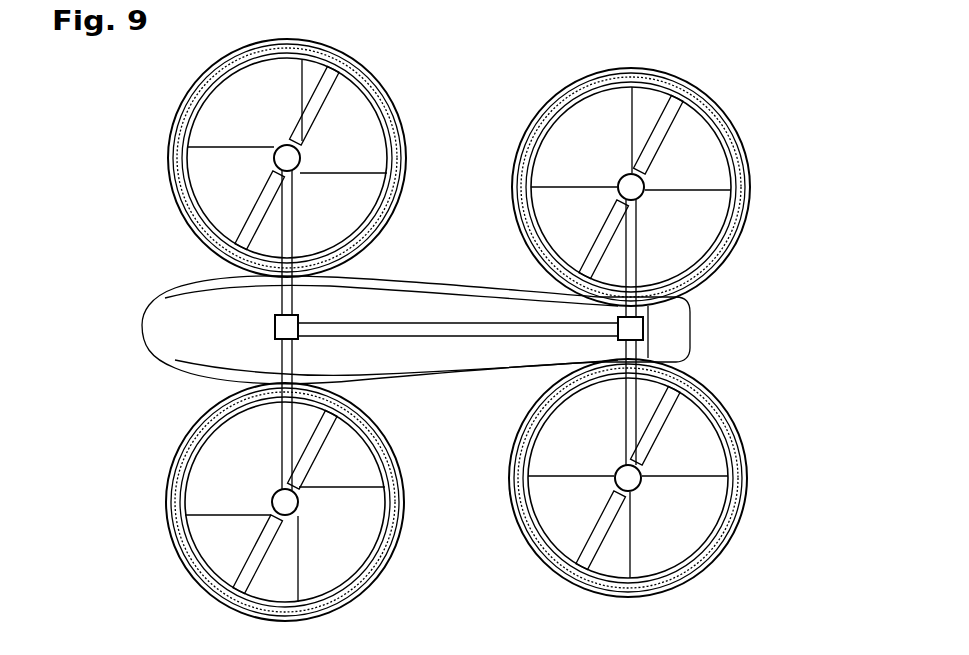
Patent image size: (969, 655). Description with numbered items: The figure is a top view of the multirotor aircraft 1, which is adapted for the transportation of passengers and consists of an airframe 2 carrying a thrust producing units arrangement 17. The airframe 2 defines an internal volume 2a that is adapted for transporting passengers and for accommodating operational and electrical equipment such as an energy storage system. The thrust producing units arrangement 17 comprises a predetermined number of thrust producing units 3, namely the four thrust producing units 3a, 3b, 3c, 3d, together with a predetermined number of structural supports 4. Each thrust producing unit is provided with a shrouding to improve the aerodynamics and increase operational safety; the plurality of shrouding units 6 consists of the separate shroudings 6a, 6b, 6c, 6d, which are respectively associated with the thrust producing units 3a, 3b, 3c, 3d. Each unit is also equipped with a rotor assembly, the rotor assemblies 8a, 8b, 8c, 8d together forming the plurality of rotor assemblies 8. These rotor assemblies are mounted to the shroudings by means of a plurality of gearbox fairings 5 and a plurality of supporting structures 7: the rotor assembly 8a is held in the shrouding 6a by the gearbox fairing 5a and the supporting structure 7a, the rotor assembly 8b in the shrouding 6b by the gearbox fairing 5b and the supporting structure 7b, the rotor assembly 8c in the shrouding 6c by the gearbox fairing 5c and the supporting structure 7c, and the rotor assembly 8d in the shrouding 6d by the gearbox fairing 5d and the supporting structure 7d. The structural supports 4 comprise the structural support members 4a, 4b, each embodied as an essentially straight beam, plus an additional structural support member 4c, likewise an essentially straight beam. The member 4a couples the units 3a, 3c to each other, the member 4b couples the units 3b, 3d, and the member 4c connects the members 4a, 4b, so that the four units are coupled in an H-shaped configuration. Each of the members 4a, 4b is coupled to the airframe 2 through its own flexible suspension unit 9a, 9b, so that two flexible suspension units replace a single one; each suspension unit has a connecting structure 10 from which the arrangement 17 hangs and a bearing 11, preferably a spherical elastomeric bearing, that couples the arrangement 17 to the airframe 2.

The multirotor aircraft 1 is at (803, 70).
The airframe 2 is at (258, 345).
The internal volume 2a is at (226, 310).
The thrust producing units 3 is at (733, 558).
The thrust producing unit 3a is at (166, 137).
The thrust producing unit 3b is at (736, 118).
The thrust producing unit 3c is at (170, 533).
The thrust producing unit 3d is at (743, 535).
The structural supports 4 is at (430, 345).
The structural support member 4a is at (279, 300).
The structural support member 4b is at (643, 265).
The additional structural support member 4c is at (453, 320).
The gearbox fairings 5 is at (641, 490).
The gearbox fairing 5a is at (276, 150).
The gearbox fairing 5b is at (619, 180).
The gearbox fairing 5c is at (272, 500).
The gearbox fairing 5d is at (616, 485).
The shrouding units 6 is at (748, 512).
The shrouding 6a is at (178, 190).
The shrouding 6b is at (699, 80).
The shrouding 6c is at (175, 467).
The shrouding 6d is at (755, 470).
The supporting structures 7 is at (682, 420).
The supporting structure 7a is at (332, 111).
The supporting structure 7b is at (688, 150).
The supporting structure 7c is at (232, 547).
The supporting structure 7d is at (582, 553).
The rotor assemblies 8 is at (703, 458).
The rotor assembly 8a is at (357, 168).
The rotor assembly 8b is at (706, 198).
The rotor assembly 8c is at (302, 575).
The rotor assembly 8d is at (648, 535).
The flexible suspension unit 9a is at (304, 327).
The flexible suspension unit 9b is at (613, 328).
The connecting structure 10 is at (273, 327).
The bearing 11 is at (182, 356).
The thrust producing units arrangement 17 is at (762, 186).